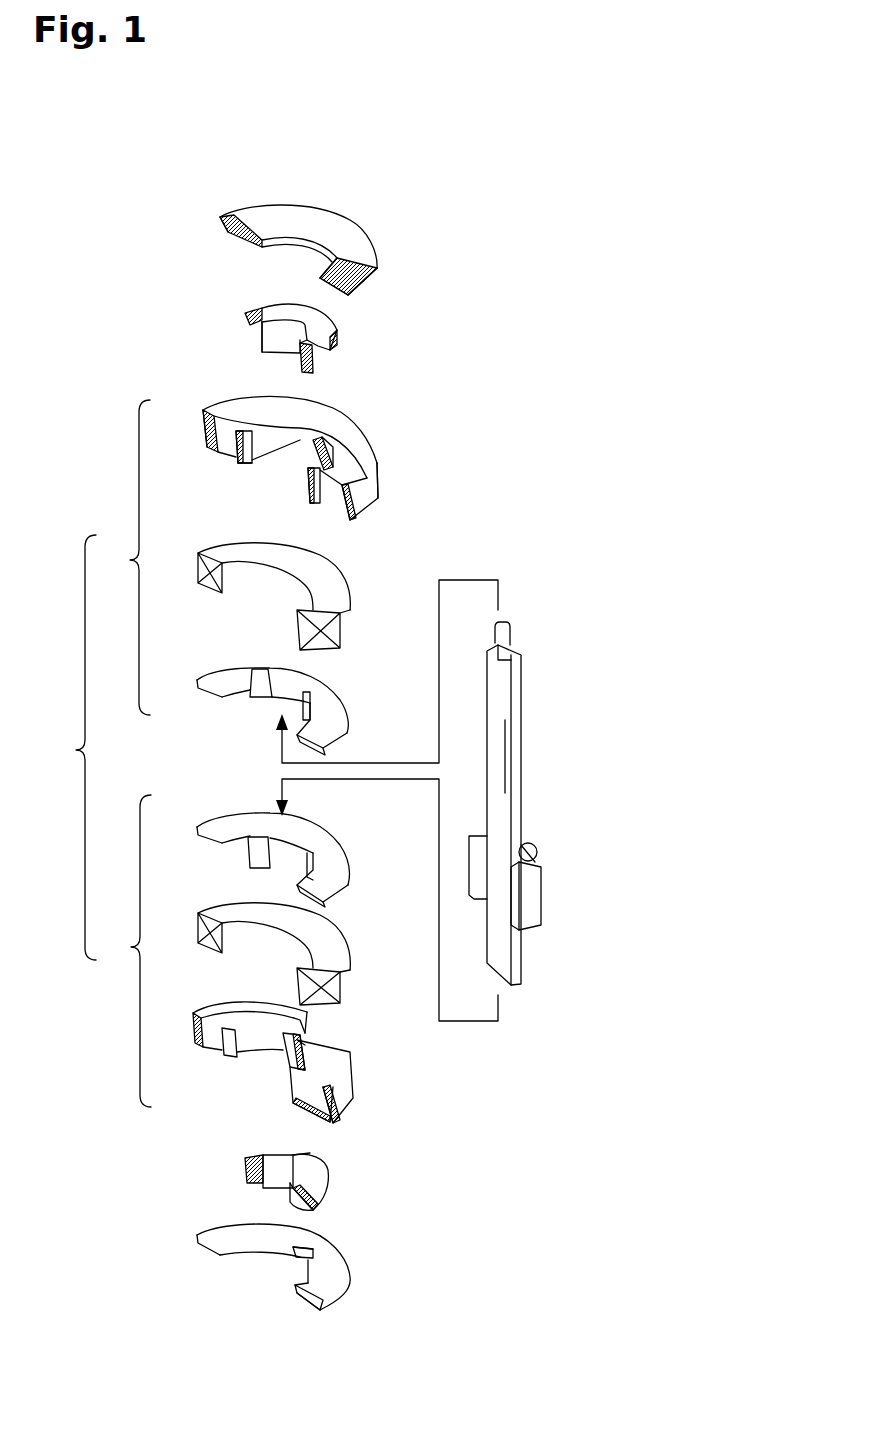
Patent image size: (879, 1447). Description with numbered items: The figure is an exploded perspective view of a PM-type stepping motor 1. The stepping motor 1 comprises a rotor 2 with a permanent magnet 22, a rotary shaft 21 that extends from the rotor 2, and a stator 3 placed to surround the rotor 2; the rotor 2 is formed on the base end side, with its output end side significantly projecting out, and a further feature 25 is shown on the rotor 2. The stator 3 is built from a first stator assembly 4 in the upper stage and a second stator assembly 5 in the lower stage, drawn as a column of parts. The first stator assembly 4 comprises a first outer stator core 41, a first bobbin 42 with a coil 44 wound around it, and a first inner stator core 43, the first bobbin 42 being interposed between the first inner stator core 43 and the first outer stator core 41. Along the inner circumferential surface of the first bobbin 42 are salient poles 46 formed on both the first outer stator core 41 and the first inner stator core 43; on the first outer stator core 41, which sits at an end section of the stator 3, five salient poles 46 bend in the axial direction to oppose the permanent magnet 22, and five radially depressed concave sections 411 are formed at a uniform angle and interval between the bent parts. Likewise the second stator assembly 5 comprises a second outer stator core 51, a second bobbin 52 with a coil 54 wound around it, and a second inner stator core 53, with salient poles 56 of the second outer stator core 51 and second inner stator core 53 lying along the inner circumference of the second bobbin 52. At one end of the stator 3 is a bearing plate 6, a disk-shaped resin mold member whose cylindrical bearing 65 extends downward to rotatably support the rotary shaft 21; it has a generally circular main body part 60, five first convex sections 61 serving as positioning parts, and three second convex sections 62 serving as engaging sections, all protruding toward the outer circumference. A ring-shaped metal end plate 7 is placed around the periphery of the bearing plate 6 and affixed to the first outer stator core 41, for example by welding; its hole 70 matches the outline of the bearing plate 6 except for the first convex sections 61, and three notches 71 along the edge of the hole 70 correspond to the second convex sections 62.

The stepping motor 1 is at (580, 307).
The rotor 2 is at (534, 834).
The rotary shaft 21 is at (523, 712).
The permanent magnet 22 is at (543, 886).
The engaging hole 25 is at (540, 846).
The stator 3 is at (253, 745).
The first stator assembly 4 is at (279, 561).
The first outer stator core 41 is at (377, 440).
The concave sections 411 is at (258, 420).
The first bobbin 42 is at (352, 576).
The first inner stator core 43 is at (348, 700).
The coil 44 is at (343, 633).
The salient poles 46 is at (236, 452).
The second stator assembly 5 is at (270, 959).
The second outer stator core 51 is at (357, 1042).
The second bobbin 52 is at (357, 940).
The second inner stator core 53 is at (357, 877).
The coil 54 is at (347, 972).
The salient poles 56 is at (252, 852).
The bearing plate 6 is at (388, 325).
The main body part 60 is at (317, 325).
The first convex sections 61 is at (262, 305).
The second convex sections 62 is at (250, 313).
The cylindrical bearing 65 is at (257, 337).
The end plate 7 is at (317, 229).
The hole 70 is at (307, 217).
The notches 71 is at (230, 212).